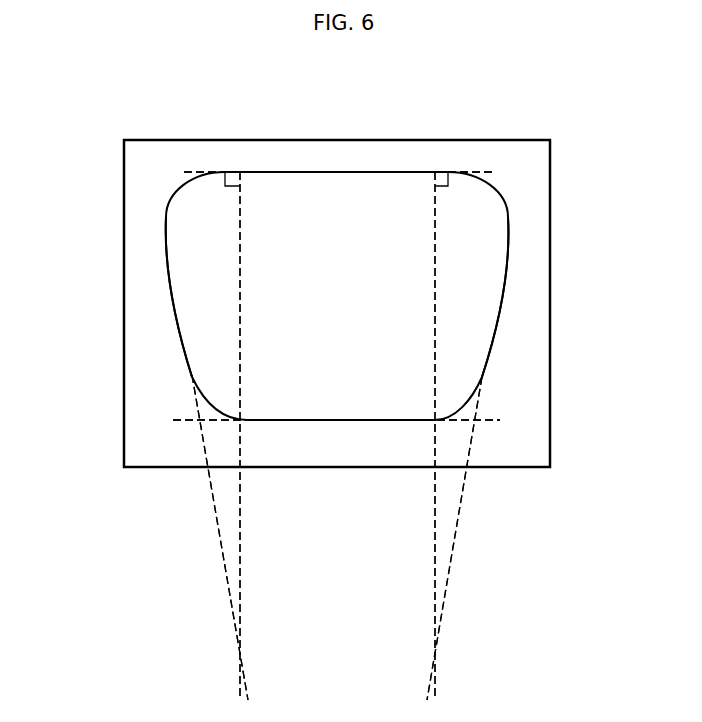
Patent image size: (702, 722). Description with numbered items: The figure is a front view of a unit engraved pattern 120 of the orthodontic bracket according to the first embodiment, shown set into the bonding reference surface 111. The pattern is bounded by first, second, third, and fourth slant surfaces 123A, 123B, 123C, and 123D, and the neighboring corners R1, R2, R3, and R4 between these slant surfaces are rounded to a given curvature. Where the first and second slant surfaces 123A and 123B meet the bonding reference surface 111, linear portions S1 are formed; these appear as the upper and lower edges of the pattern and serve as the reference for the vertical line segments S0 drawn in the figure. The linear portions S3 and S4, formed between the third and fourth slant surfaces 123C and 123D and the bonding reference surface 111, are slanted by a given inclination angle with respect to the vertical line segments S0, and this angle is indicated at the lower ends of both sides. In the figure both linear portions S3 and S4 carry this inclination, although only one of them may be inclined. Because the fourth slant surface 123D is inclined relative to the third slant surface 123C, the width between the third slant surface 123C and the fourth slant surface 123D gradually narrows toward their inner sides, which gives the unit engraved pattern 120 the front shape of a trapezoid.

The bonding reference surface 111 is at (540, 357).
The unit engraved pattern 120 is at (336, 296).
The first slant surface 123A is at (343, 172).
The second slant surface 123B is at (330, 420).
The third slant surface 123C is at (483, 298).
The fourth slant surface 123D is at (188, 330).
The corner R1 is at (492, 193).
The corner R2 is at (476, 390).
The corner R3 is at (193, 375).
The corner R4 is at (170, 215).
The linear portion S1 is at (481, 172).
The linear portion S3 is at (505, 275).
The linear portion S4 is at (172, 275).
The line segment S0 is at (240, 545).